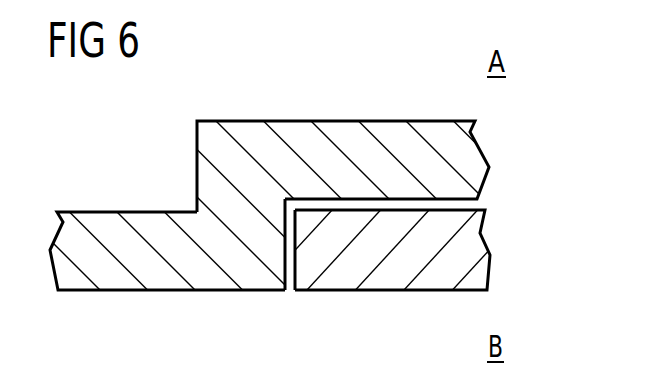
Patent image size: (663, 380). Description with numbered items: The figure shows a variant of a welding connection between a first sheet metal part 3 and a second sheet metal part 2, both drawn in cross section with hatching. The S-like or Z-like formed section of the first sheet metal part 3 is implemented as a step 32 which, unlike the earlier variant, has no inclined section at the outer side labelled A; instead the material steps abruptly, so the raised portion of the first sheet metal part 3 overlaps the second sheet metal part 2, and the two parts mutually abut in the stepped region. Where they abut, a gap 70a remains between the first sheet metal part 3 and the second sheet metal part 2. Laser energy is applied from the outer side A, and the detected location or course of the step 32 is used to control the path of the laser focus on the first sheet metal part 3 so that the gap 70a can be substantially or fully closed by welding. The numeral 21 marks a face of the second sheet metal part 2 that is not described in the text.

The second sheet metal part 2 is at (388, 275).
The first sheet metal part 3 is at (316, 225).
The end face of second component 21 is at (296, 244).
The step 32 is at (243, 190).
The gap 70a is at (291, 277).